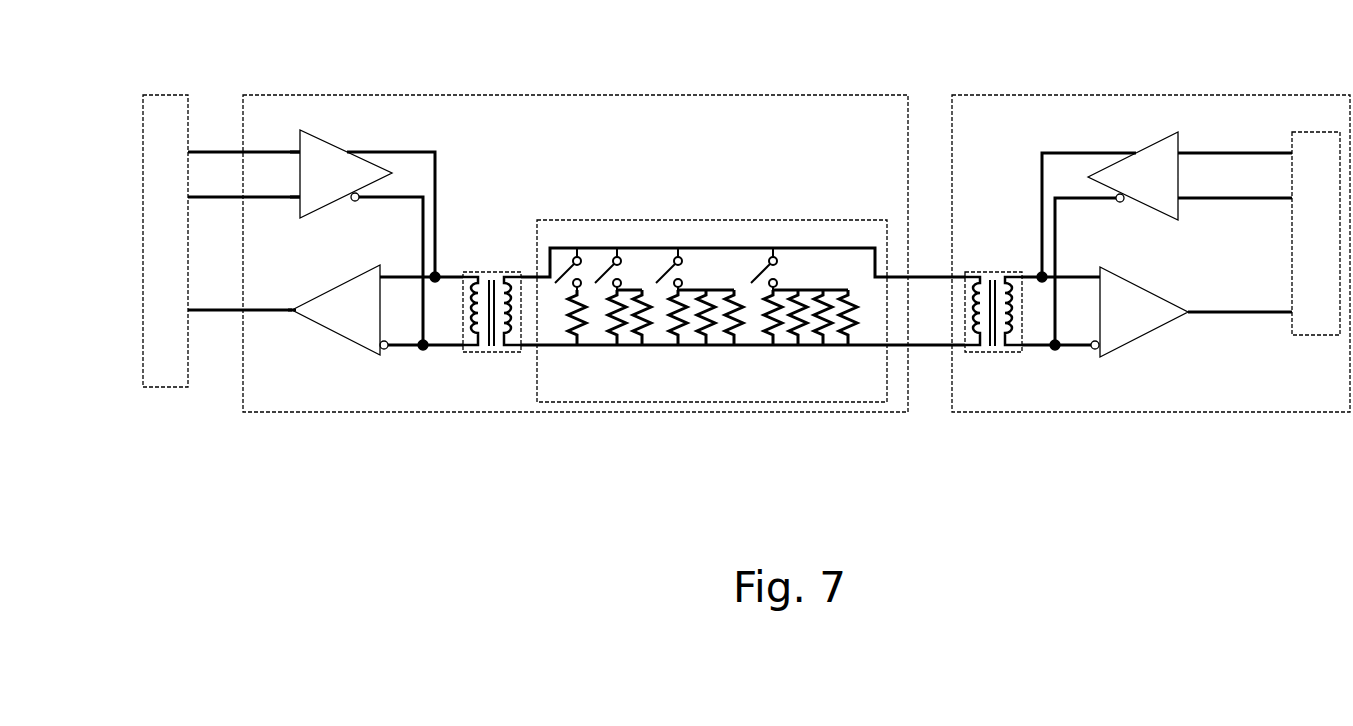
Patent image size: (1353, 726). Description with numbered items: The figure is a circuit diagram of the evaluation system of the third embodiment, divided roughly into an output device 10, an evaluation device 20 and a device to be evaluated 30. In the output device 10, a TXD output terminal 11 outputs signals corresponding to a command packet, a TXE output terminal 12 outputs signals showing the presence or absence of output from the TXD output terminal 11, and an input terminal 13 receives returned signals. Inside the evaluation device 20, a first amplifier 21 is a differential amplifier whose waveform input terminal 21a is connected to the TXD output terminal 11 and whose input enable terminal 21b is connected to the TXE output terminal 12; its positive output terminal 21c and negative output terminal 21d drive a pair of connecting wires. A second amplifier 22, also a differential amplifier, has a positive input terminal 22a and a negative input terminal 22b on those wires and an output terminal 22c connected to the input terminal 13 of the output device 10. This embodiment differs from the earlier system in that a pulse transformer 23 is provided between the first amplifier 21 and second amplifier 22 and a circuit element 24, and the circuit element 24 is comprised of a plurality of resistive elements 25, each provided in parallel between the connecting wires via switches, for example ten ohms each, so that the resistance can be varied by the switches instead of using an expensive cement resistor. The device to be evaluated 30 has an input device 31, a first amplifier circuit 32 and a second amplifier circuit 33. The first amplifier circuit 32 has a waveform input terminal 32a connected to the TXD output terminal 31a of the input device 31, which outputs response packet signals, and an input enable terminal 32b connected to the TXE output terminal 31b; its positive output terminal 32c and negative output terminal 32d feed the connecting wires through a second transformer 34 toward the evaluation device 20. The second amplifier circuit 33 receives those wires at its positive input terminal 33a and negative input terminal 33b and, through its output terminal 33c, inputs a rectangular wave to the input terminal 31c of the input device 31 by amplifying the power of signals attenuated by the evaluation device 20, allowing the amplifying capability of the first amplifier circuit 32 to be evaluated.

The output device 10 is at (185, 95).
The TXD output terminal 11 is at (231, 153).
The TXE output terminal 12 is at (231, 198).
The input terminal 13 is at (227, 311).
The evaluation device 20 is at (527, 95).
The first amplifier 21 is at (346, 174).
The waveform input terminal 21a is at (293, 150).
The input enable terminal 21b is at (274, 203).
The positive output terminal 21c is at (349, 150).
The negative output terminal 21d is at (352, 205).
The second amplifier 22 is at (336, 310).
The positive input terminal 22a is at (395, 264).
The negative input terminal 22b is at (389, 353).
The output terminal 22c is at (293, 304).
The pulse transformer 23 is at (497, 266).
The circuit element 24 is at (720, 219).
The resistive element 25 is at (717, 351).
The device to be evaluated 30 is at (1190, 95).
The input device 31 is at (1318, 342).
The TXD output terminal 31a is at (1257, 154).
The TXE output terminal 31b is at (1257, 199).
The input terminal 31c is at (1261, 313).
The first amplifier circuit 32 is at (1133, 176).
The waveform input terminal 32a is at (1191, 150).
The input enable terminal 32b is at (1186, 203).
The positive output terminal 32c is at (1138, 150).
The negative output terminal 32d is at (1120, 204).
The second amplifier circuit 33 is at (1144, 312).
The positive input terminal 33a is at (1094, 274).
The negative input terminal 33b is at (1093, 352).
The output terminal 33c is at (1196, 304).
The transformer 34 is at (999, 266).